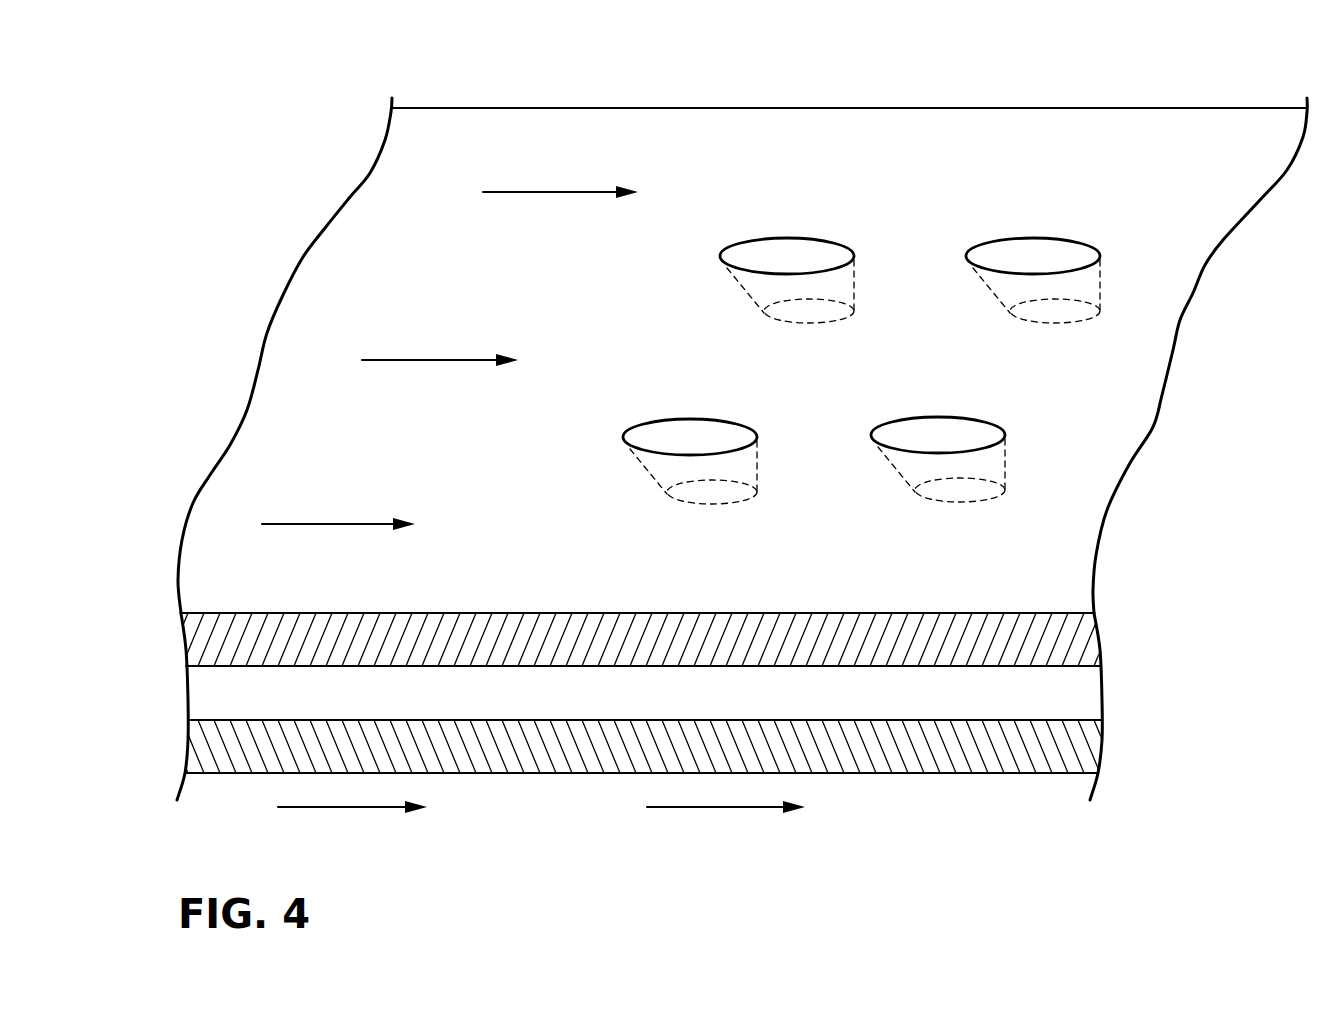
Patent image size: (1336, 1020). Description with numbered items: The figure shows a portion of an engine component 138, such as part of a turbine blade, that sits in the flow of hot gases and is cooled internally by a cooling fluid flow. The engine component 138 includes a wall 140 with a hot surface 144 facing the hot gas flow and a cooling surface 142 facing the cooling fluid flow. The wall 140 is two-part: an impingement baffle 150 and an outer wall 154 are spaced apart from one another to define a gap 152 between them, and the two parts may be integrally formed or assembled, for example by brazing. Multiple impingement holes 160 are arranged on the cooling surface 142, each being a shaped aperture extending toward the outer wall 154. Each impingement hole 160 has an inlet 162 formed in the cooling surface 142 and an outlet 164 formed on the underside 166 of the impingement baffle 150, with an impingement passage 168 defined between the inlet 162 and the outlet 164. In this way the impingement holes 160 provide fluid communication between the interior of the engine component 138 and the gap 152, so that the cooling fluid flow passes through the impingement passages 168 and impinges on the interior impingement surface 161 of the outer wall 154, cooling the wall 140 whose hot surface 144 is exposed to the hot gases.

The engine component 138 is at (470, 152).
The cooling surface 142 is at (548, 155).
The wall 140 is at (165, 613).
The impingement baffle 150 is at (1112, 613).
The gap 152 is at (1112, 666).
The outer wall 154 is at (1112, 720).
The hot surface 144 is at (987, 773).
The interior impingement surface 161 is at (933, 695).
The underside 166 is at (527, 666).
The impingement hole 160 is at (895, 349).
The inlet 162 is at (797, 238).
The outlet 164 is at (817, 323).
The impingement passage 168 is at (820, 260).